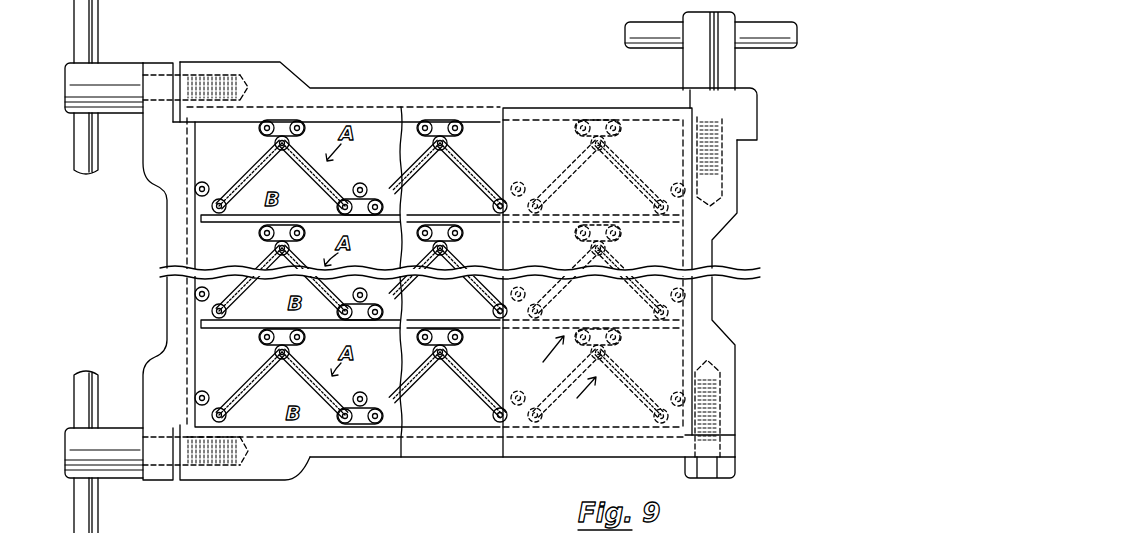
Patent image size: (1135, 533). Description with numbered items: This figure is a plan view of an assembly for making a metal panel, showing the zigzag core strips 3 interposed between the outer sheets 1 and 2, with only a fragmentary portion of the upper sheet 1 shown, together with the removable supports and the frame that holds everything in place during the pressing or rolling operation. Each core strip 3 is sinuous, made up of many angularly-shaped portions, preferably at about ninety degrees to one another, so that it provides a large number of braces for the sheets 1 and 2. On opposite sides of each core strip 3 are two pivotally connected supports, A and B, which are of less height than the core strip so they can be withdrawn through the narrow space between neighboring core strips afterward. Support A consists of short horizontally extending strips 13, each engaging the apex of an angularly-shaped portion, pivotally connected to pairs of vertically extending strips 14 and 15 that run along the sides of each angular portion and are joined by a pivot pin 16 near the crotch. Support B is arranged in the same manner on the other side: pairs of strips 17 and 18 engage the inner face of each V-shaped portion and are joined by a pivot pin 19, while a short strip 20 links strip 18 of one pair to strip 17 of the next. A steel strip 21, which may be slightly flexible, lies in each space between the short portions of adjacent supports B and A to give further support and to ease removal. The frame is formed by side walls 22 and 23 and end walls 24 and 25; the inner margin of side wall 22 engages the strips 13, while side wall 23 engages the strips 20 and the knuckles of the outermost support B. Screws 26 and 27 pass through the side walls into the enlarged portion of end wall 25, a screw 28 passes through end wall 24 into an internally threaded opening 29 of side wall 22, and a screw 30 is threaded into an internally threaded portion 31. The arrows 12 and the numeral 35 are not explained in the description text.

The outer sheet 1 is at (525, 125).
The outer sheet 2 is at (210, 353).
The core strip 3 is at (225, 178).
The direction of movement 12 is at (557, 375).
The short horizontally extending strip 13 is at (292, 120).
The vertically extending strip 14 is at (420, 183).
The vertically extending strip 15 is at (320, 137).
The pivot pin 16 is at (362, 188).
The strip 17 is at (235, 218).
The strip 18 is at (314, 183).
The pivot pin 19 is at (300, 174).
The horizontally extending short strip 20 is at (367, 218).
The strip 21 is at (205, 227).
The side wall 22 is at (478, 90).
The side wall 23 is at (444, 448).
The end wall 24 is at (170, 222).
The end wall 25 is at (712, 258).
The screw 26 is at (722, 162).
The screw 27 is at (722, 393).
The screw 28 is at (205, 72).
The internally threaded opening 29 is at (247, 70).
The screw 30 is at (198, 468).
The internally threaded portion 31 is at (248, 463).
The support 35 is at (422, 521).